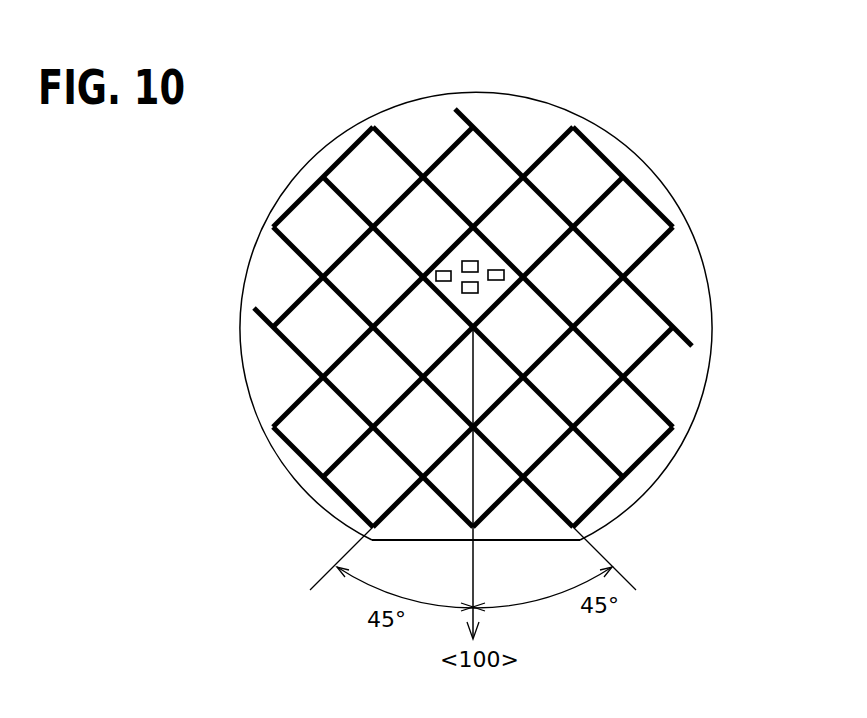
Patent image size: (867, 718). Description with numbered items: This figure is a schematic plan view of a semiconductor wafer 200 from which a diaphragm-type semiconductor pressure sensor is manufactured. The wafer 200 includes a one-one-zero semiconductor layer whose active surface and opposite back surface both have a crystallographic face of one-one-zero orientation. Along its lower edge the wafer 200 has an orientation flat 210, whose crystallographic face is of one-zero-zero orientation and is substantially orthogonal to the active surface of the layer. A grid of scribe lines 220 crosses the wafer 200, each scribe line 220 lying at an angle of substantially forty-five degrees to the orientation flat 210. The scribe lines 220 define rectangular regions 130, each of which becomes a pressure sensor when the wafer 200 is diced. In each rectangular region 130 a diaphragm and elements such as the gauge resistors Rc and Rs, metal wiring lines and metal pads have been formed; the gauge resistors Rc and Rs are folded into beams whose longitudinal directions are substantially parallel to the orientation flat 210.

The semiconductor wafer 200 is at (647, 160).
The scribe lines 220 is at (503, 157).
The rectangular regions 130 is at (497, 248).
The orientation flat 210 is at (533, 540).
The gauge resistors Rs1, Rs2 Rs is at (443, 270).
The gauge resistors Rc1, Rc2 Rc is at (468, 261).